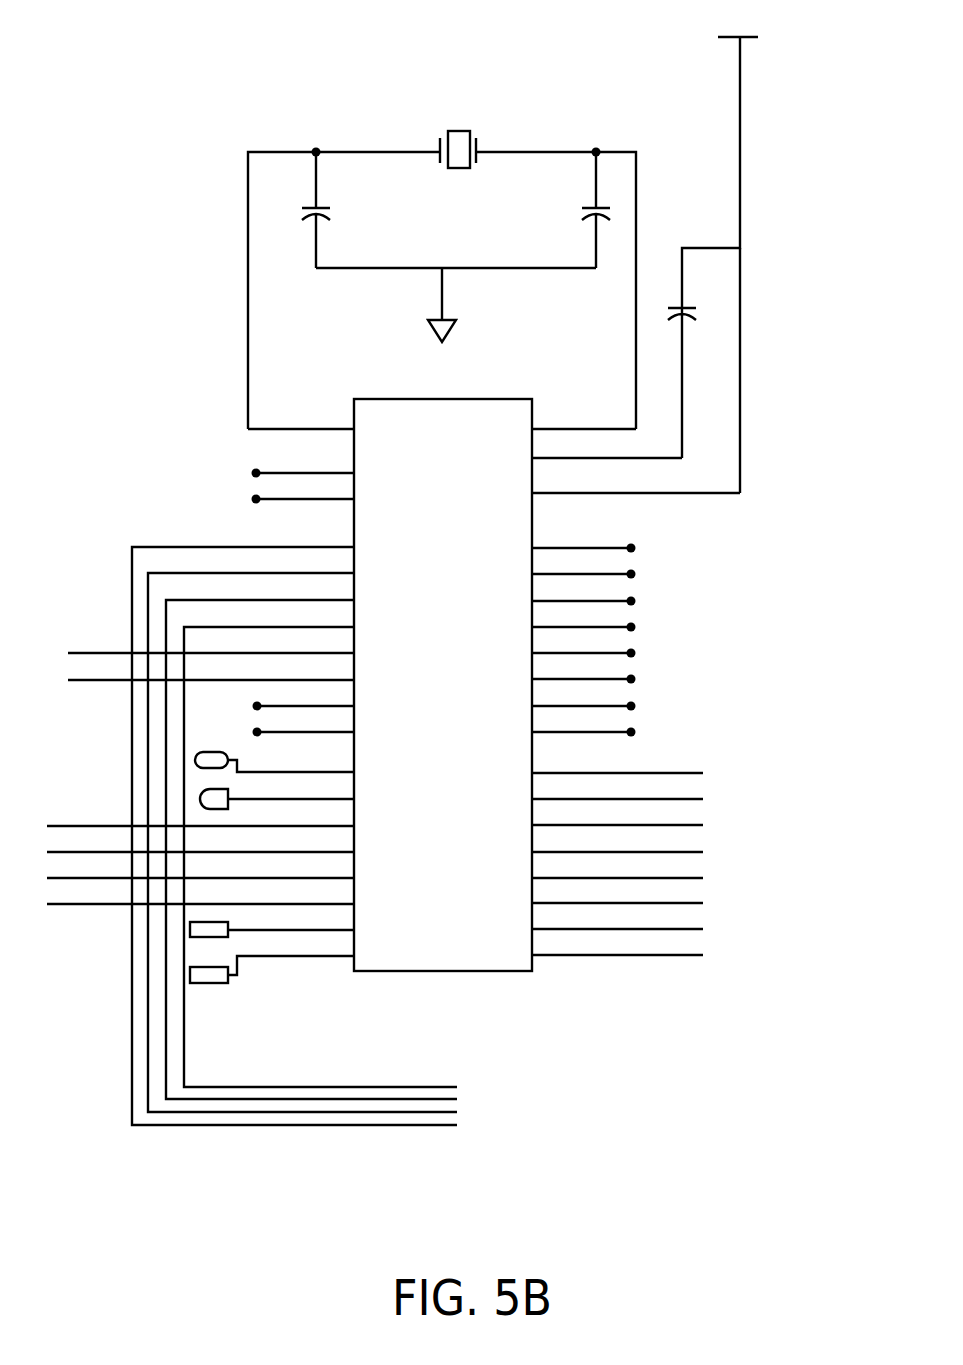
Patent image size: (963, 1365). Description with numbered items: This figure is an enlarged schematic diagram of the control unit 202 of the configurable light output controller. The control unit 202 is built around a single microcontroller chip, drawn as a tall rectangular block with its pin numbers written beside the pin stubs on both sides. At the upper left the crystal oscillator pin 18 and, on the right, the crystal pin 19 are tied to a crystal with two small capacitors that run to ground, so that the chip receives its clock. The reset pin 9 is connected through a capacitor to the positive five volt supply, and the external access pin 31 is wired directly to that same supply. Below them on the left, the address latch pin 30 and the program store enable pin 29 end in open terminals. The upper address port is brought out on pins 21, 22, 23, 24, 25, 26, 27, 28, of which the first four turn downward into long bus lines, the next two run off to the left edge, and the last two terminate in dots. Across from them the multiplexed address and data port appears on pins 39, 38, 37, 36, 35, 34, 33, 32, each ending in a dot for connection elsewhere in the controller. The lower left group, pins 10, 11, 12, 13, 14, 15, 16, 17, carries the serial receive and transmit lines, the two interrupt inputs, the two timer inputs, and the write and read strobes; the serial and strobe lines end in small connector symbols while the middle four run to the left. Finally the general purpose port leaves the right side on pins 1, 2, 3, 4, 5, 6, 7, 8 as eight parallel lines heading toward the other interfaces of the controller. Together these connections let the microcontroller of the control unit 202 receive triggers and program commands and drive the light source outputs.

The control unit 202 is at (500, 1196).
The XTAL2 pin 18 is at (301, 419).
The XTAL pin 19 is at (584, 419).
The RST pin 9 is at (607, 448).
The EA pin 31 is at (636, 483).
The ALE pin 30 is at (303, 463).
The PSEN pin 29 is at (303, 489).
The P20/A8 pin 21 is at (294, 824).
The P21/A9 pin 22 is at (302, 830).
The P22/A10 pin 23 is at (311, 837).
The P23/A11 pin 24 is at (320, 845).
The P24/A12 pin 25 is at (211, 643).
The P25/A13 pin 26 is at (211, 670).
The P26/A14 pin 27 is at (304, 696).
The P27/A15 pin 28 is at (304, 722).
The P30/RXD pin 10 is at (274, 762).
The P31/TXD pin 11 is at (277, 792).
The P32/INT0 pin 12 is at (200, 816).
The P33/INT1 pin 13 is at (200, 842).
The P34/T0 pin 14 is at (200, 868).
The P35/T1 pin 15 is at (200, 894).
The P36/WR pin 16 is at (272, 921).
The P37/RD pin 17 is at (272, 957).
The P00/AD0 pin 39 is at (584, 538).
The P01/AD1 pin 38 is at (584, 564).
The P02/AD2 pin 37 is at (584, 591).
The P03/AD3 pin 36 is at (584, 617).
The P04/AD4 pin 35 is at (584, 643).
The P05/AD5 pin 34 is at (584, 669).
The P06/AD6 pin 33 is at (584, 696).
The P07/AD7 pin 32 is at (584, 722).
The P10 pin 1 is at (617, 763).
The P11 pin 2 is at (617, 789).
The P12 pin 3 is at (617, 815).
The P13 pin 4 is at (617, 842).
The P14 pin 5 is at (617, 868).
The P15 pin 6 is at (617, 893).
The P16 pin 7 is at (617, 919).
The P17 pin 8 is at (617, 945).